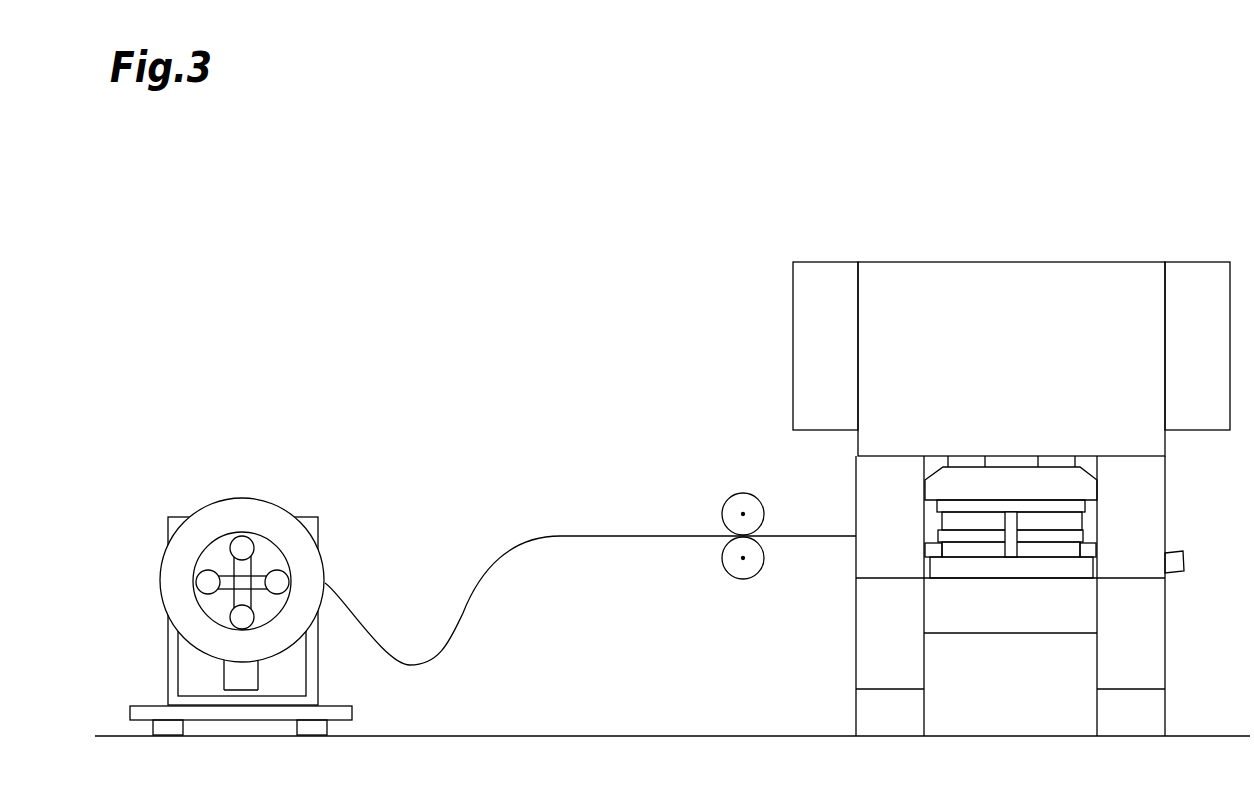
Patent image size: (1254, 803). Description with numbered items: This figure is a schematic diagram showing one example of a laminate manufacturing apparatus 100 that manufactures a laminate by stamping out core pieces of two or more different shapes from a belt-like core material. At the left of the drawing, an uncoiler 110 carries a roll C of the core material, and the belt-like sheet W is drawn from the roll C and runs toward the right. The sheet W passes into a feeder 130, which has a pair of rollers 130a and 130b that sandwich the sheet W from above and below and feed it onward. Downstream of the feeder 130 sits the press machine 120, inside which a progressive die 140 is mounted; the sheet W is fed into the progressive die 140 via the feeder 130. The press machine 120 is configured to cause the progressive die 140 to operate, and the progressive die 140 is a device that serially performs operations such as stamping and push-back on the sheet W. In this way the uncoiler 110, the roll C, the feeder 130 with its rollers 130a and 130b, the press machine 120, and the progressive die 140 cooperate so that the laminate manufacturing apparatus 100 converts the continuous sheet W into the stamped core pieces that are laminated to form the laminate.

The laminate manufacturing apparatus 100 is at (1166, 160).
The uncoiler 110 is at (183, 517).
The roll C is at (242, 500).
The sheet W is at (352, 617).
The press machine 120 is at (1010, 262).
The feeder 130 is at (720, 458).
The roller 130a is at (758, 495).
The roller 130b is at (758, 572).
The progressive die 140 is at (1073, 523).